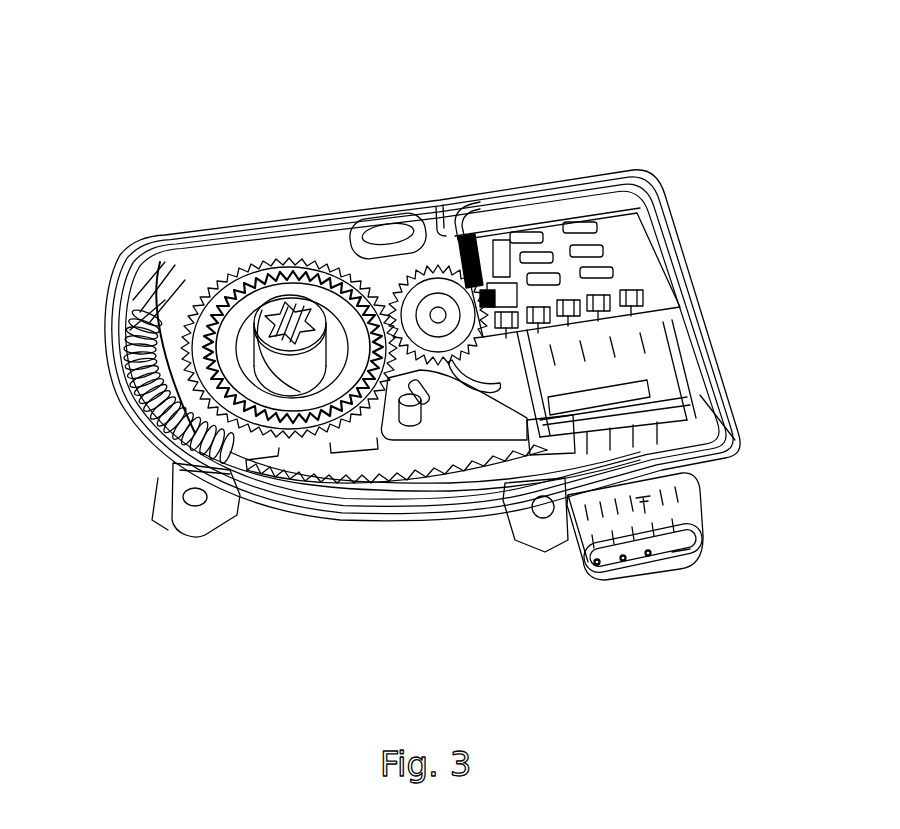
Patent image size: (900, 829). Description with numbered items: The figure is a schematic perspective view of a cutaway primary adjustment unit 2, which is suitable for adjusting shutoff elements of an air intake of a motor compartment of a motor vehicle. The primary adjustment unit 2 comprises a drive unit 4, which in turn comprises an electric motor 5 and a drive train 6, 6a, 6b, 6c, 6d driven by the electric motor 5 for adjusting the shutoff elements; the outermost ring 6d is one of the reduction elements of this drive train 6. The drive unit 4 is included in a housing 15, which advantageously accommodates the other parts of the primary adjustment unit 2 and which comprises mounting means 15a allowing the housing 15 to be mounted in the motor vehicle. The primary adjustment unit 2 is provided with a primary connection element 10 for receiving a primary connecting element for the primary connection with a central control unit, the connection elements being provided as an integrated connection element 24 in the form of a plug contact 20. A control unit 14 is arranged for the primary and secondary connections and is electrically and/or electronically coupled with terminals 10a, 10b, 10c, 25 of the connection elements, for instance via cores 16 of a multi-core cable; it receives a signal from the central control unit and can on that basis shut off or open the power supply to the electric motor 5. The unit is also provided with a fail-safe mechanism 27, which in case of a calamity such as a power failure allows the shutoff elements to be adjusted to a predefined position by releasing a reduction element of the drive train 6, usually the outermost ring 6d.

The primary adjustment unit 2 is at (135, 158).
The drive unit 4 is at (389, 178).
The electric motor 5 is at (649, 228).
The drive train 6 is at (291, 342).
The drive train element 6a is at (467, 233).
The drive train element 6b is at (458, 340).
The drive train element 6c is at (310, 412).
The outermost ring 6d is at (175, 372).
The primary connection element 10 is at (590, 533).
The terminal 10a is at (593, 573).
The terminal 10b is at (625, 573).
The terminal 10c is at (647, 565).
The control unit 14 is at (640, 270).
The housing 15 is at (692, 410).
The mounting means 15a is at (388, 222).
The cores 16 is at (540, 375).
The plug contact 20 is at (658, 571).
The integrated connection element 24 is at (660, 497).
The terminal 25 is at (677, 560).
The fail-safe mechanism 27 is at (430, 432).